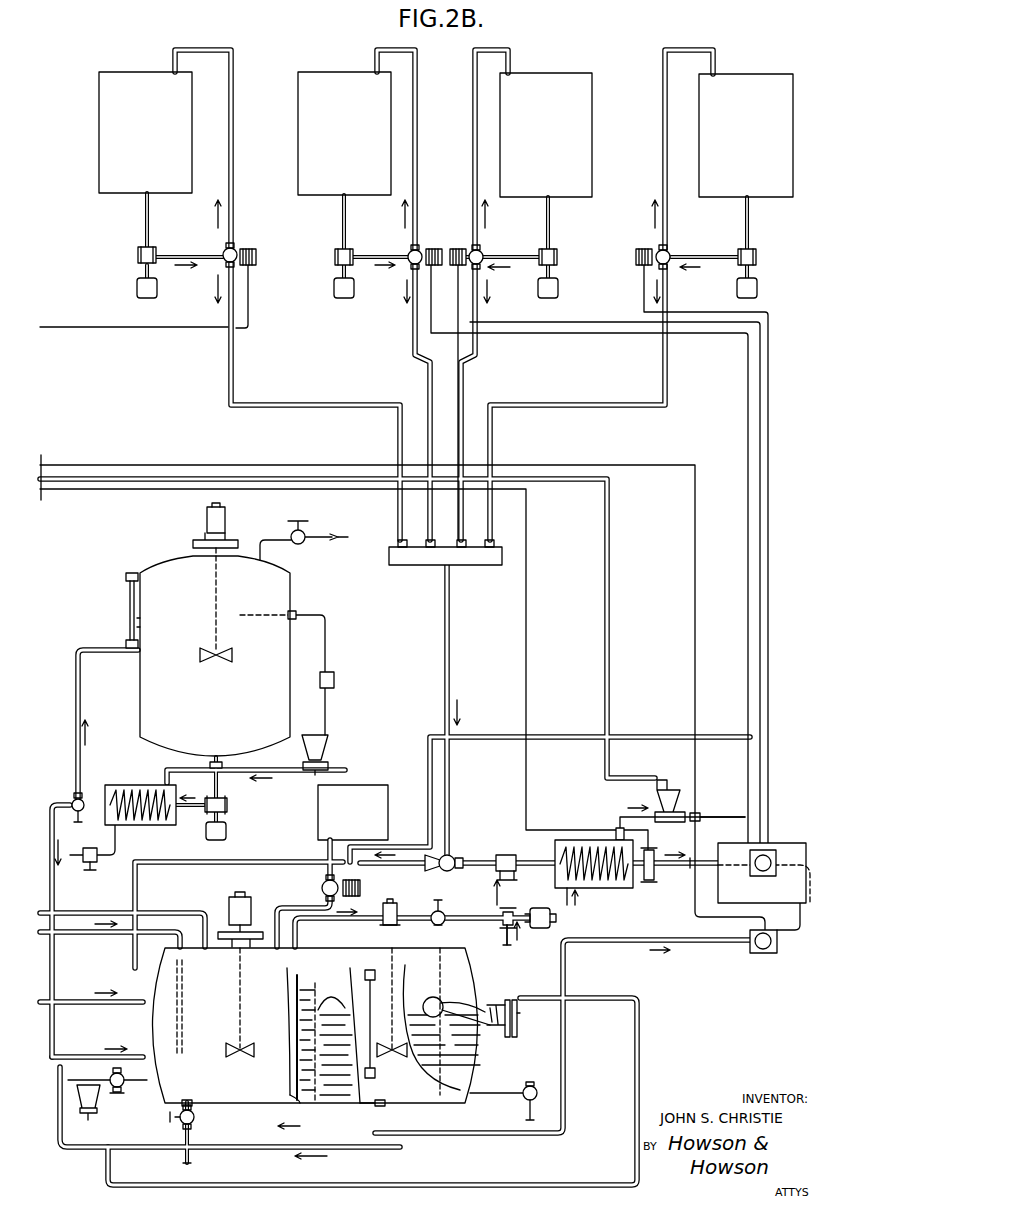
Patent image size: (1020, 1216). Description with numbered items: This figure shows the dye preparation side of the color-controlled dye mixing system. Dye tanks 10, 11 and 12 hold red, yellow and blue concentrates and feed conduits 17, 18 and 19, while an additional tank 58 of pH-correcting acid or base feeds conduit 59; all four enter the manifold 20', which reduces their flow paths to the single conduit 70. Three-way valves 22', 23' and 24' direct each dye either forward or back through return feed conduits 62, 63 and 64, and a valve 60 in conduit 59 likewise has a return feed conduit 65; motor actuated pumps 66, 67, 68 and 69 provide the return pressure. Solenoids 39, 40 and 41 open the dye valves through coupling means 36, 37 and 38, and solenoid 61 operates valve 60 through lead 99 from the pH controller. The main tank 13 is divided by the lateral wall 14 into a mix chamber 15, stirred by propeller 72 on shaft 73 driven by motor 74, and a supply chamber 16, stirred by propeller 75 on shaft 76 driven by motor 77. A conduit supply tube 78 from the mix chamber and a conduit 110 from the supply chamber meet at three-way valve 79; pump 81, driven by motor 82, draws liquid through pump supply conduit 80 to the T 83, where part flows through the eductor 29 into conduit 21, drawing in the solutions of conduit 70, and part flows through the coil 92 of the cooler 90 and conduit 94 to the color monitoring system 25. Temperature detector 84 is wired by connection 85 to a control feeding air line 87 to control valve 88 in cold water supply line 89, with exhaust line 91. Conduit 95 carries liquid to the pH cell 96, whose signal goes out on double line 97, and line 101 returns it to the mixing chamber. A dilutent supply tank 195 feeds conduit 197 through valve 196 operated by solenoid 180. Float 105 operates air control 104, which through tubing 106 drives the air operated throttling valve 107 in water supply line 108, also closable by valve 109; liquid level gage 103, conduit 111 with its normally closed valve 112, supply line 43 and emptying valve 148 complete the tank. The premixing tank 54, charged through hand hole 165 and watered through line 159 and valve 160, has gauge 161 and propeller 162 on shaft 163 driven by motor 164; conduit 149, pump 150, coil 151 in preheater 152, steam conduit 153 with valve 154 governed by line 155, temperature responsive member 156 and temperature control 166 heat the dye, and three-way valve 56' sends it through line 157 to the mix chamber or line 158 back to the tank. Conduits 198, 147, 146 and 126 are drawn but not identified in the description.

The additional tank 58 is at (157, 140).
The tank 10 is at (356, 140).
The tank 11 is at (558, 140).
The tank 12 is at (756, 140).
The return feed conduit 65 is at (232, 135).
The return feed conduit 62 is at (418, 128).
The return feed conduit 63 is at (473, 150).
The return feed conduit 64 is at (663, 130).
The motor actuated pump 69 is at (136, 255).
The valve 60 is at (222, 252).
The solenoid 61 is at (256, 260).
The motor actuated pump 66 is at (333, 256).
The three-way valve 22' is at (403, 247).
The solenoid 39 is at (433, 248).
The solenoid 40 is at (458, 248).
The three-way valve 23' is at (494, 245).
The motor actuated pump 67 is at (557, 257).
The solenoid 41 is at (644, 248).
The three-way valve 24' is at (680, 245).
The motor actuated pump 68 is at (757, 257).
The lead 99 is at (150, 330).
The conduit 59 is at (236, 368).
The conduit 17 is at (428, 386).
The conduit 18 is at (464, 392).
The conduit 19 is at (662, 374).
The coupling means 36 is at (746, 415).
The coupling means 37 is at (762, 463).
The coupling means 38 is at (770, 532).
The manifold 20' is at (443, 564).
The conduit 70 is at (444, 642).
The air line 87 is at (613, 622).
The double line 97 is at (697, 648).
The connection 85 is at (528, 710).
The tank 54 is at (232, 700).
The motor 164 is at (205, 520).
The hand hole 165 is at (175, 565).
The manually operated valve 160 is at (292, 530).
The water line 159 is at (338, 537).
The gauge 161 is at (126, 610).
The shaft 163 is at (212, 604).
The propeller 162 is at (205, 660).
The temperature responsive member 156 is at (293, 611).
The line 155 is at (90, 864).
The temperature control 166 is at (336, 676).
The valve 154 is at (330, 758).
The line 158 is at (82, 702).
The line 157 is at (62, 798).
The three-way valve 56' is at (89, 789).
The conduit 149 is at (214, 798).
The motor driven pump 150 is at (230, 815).
The coil 151 is at (186, 806).
The preheater 152 is at (150, 822).
The conduit 153 is at (296, 772).
The pipe 198 is at (428, 766).
The dilutent supply tank 195 is at (364, 822).
The valve 196 is at (323, 888).
The conduit 197 is at (306, 898).
The solenoid 180 is at (360, 890).
The conduit 21 is at (266, 861).
The eductor 29 is at (455, 855).
The T 83 is at (505, 855).
The control valve 88 is at (668, 780).
The cold water supply line 89 is at (716, 815).
The coil 92 is at (600, 838).
The cooler 90 is at (610, 919).
The line 91 is at (565, 898).
The temperature detector 84 is at (650, 883).
The conduit 94 is at (690, 868).
The color monitoring system 25 is at (785, 846).
The conduit 95 is at (800, 927).
The pH cell 96 is at (762, 954).
The pipe 147 is at (95, 912).
The pipe 146 is at (84, 933).
The pipe 126 is at (118, 1006).
The motor 74 is at (230, 912).
The motor 77 is at (396, 903).
The three-way valve 79 is at (442, 910).
The pump supply conduit 80 is at (500, 925).
The pump 81 is at (506, 945).
The motor 82 is at (541, 928).
The tank 13 is at (218, 1022).
The shaft 73 is at (245, 996).
The propeller 72 is at (242, 1057).
The mix chamber 15 is at (290, 980).
The supply chamber 16 is at (365, 975).
The liquid level gage 103 is at (366, 974).
The shaft 76 is at (393, 988).
The mixing propeller 75 is at (405, 1058).
The conduit 110 is at (428, 1000).
The float 105 is at (465, 1000).
The air control 104 is at (518, 1024).
The tubing 106 is at (636, 998).
The conduit supply tube 78 is at (292, 1094).
The lateral wall 14 is at (355, 1104).
The conduit 111 is at (491, 1092).
The valve 112 is at (532, 1086).
The line 101 is at (540, 1134).
The valve 148 is at (194, 1117).
The water supply line 108 is at (134, 1080).
The valve 109 is at (117, 1093).
The air operated throttling valve 107 is at (88, 1114).
The supply line 43 is at (240, 1148).